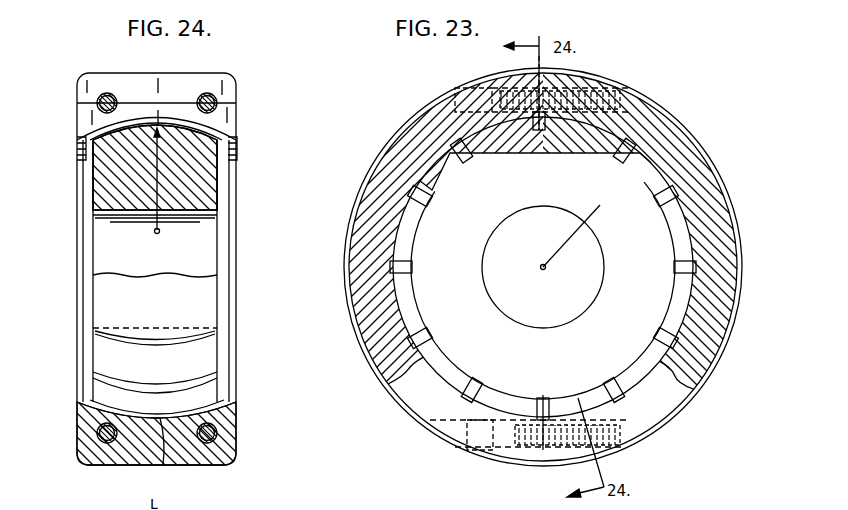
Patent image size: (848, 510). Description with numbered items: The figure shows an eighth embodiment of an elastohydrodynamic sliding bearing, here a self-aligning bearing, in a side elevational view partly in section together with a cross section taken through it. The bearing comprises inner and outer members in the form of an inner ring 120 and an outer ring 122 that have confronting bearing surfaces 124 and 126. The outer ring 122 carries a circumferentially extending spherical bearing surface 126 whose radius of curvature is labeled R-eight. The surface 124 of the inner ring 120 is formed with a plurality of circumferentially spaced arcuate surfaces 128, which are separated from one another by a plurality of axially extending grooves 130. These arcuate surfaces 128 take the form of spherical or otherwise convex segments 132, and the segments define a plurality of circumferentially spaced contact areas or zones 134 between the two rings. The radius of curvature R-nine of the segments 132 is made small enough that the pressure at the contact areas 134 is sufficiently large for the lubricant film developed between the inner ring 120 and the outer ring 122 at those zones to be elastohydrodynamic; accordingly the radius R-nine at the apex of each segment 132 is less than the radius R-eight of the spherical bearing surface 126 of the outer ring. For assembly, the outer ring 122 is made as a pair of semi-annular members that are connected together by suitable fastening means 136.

In FIG. 24, the inner ring 120 is at (210, 295).
In FIG. 23, the inner ring 120 is at (593, 272).
In FIG. 24, the outer ring 122 is at (220, 123).
In FIG. 23, the outer ring 122 is at (432, 120).
In FIG. 24, the bearing surface 124 is at (97, 140).
In FIG. 23, the bearing surface 124 is at (680, 220).
In FIG. 24, the spherical bearing surface 126 is at (150, 118).
In FIG. 23, the spherical bearing surface 126 is at (605, 150).
In FIG. 24, the arcuate surfaces 128 is at (217, 152).
In FIG. 23, the arcuate surfaces 128 is at (477, 373).
In FIG. 24, the axially extending grooves 130 is at (212, 173).
In FIG. 23, the axially extending grooves 130 is at (418, 266).
In FIG. 24, the convex segments 132 is at (93, 183).
In FIG. 23, the convex segments 132 is at (403, 215).
In FIG. 24, the contact areas 134 is at (163, 463).
In FIG. 23, the contact areas 134 is at (657, 157).
In FIG. 24, the fastening means 136 is at (97, 102).
In FIG. 23, the fastening means 136 is at (463, 90).